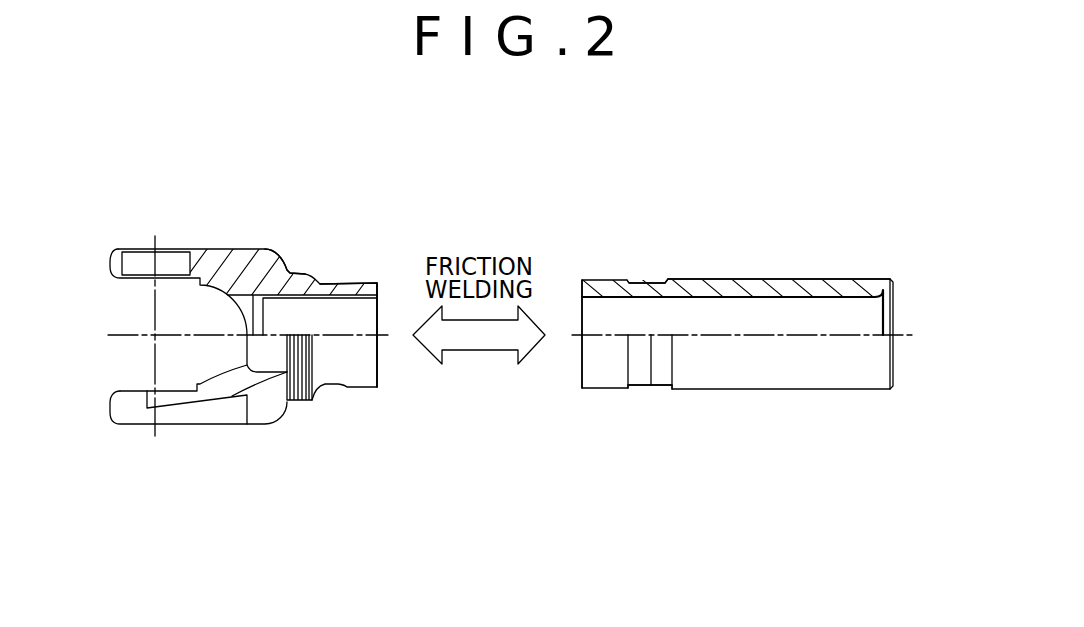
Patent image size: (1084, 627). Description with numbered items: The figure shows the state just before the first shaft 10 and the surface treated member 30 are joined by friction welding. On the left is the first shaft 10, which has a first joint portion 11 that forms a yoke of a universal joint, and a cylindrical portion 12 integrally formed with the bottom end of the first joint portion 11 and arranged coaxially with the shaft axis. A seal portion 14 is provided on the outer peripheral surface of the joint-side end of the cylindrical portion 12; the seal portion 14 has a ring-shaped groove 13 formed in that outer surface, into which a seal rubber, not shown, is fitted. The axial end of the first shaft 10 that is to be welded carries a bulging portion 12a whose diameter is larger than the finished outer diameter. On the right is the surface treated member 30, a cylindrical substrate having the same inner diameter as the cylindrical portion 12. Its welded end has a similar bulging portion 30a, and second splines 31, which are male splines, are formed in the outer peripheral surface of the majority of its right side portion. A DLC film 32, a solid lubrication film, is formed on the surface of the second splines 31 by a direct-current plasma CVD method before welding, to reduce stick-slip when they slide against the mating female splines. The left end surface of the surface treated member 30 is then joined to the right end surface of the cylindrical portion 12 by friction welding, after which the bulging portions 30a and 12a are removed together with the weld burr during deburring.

The first shaft 10 is at (263, 304).
The first joint portion 11 is at (203, 413).
The cylindrical portion 12 is at (328, 284).
The bulging portion 12a is at (343, 284).
The ring-shaped groove 13 is at (300, 402).
The seal portion 14 is at (297, 266).
The surface treated member 30 is at (738, 276).
The bulging portion 30a is at (610, 279).
The second splines 31 is at (696, 281).
The DLC film 32 is at (751, 279).